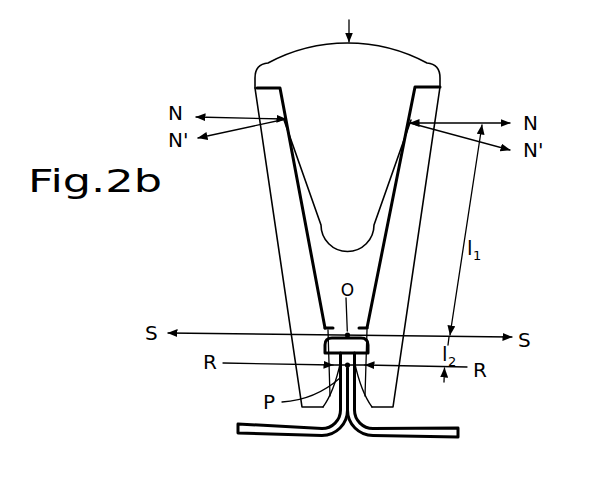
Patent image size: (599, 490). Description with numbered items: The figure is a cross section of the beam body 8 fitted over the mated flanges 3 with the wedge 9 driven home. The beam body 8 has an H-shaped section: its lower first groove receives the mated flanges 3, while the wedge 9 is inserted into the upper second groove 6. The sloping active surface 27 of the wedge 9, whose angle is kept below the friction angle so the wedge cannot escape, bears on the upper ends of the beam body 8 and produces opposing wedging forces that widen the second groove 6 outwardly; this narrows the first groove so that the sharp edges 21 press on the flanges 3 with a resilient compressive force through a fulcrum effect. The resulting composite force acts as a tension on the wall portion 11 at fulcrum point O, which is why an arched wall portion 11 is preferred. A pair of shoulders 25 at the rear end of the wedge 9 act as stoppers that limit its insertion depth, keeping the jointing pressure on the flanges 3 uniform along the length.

The shoulders 25 is at (270, 77).
The beam body 8 is at (297, 273).
The active surface 27 is at (302, 197).
The wall portion 11 is at (333, 328).
The wedge 9 is at (318, 163).
The second groove 6 is at (330, 262).
The flanges 3 is at (355, 380).
The edges 21 is at (345, 366).